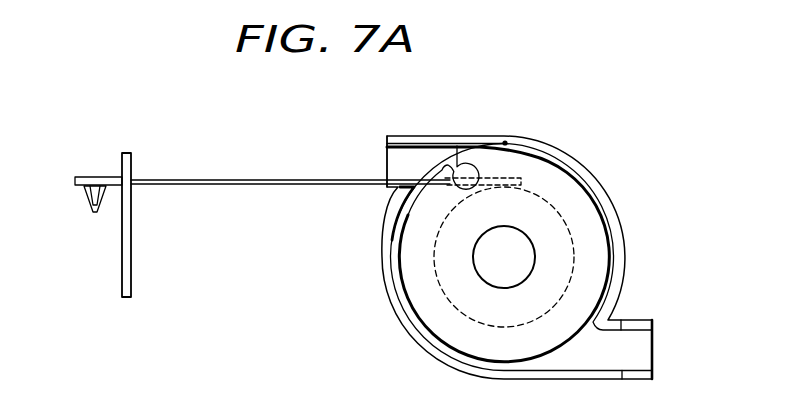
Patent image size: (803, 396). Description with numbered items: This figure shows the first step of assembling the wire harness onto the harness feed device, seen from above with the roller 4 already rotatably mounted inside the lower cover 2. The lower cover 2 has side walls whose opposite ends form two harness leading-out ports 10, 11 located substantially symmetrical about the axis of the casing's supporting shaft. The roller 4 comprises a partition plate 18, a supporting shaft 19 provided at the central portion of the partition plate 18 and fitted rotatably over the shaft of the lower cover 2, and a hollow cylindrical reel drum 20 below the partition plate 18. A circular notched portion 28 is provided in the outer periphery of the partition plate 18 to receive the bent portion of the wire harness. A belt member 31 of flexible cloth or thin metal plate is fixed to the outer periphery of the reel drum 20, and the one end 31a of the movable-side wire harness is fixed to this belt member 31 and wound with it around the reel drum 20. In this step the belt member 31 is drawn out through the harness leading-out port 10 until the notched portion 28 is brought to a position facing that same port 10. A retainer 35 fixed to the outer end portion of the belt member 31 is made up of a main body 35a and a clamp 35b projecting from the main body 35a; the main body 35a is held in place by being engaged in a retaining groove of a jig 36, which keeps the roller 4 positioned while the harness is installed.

The lower cover 2 is at (606, 181).
The roller 4 is at (506, 140).
The harness leading-out port 10 is at (390, 149).
The harness leading-out port 11 is at (634, 369).
The partition plate 18 is at (425, 294).
The supporting shaft 19 is at (533, 272).
The reel drum 20 is at (574, 246).
The notched portion 28 is at (459, 145).
The belt member 31 is at (213, 179).
The one end of the movable-side wire harness 31a is at (502, 172).
The retainer 35 is at (88, 207).
The main body 35a is at (97, 176).
The clamp 35b is at (97, 216).
The jig 36 is at (132, 282).